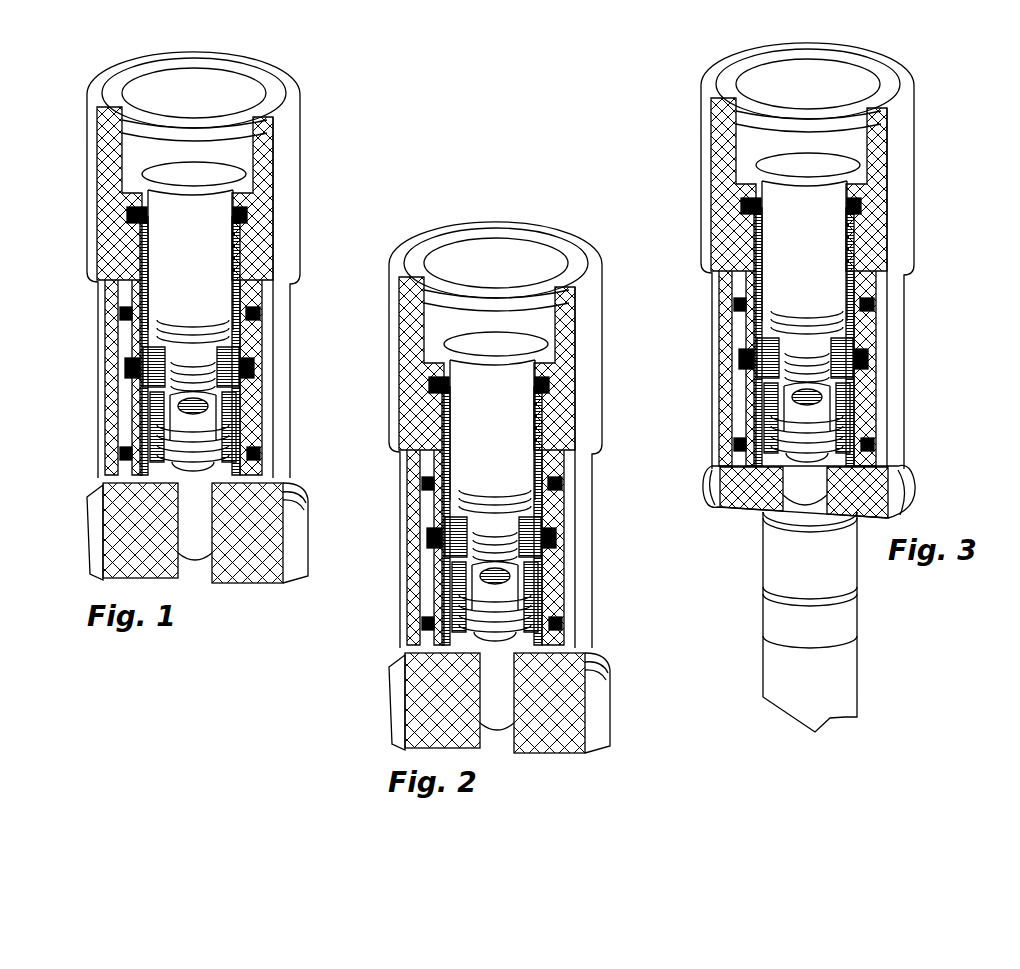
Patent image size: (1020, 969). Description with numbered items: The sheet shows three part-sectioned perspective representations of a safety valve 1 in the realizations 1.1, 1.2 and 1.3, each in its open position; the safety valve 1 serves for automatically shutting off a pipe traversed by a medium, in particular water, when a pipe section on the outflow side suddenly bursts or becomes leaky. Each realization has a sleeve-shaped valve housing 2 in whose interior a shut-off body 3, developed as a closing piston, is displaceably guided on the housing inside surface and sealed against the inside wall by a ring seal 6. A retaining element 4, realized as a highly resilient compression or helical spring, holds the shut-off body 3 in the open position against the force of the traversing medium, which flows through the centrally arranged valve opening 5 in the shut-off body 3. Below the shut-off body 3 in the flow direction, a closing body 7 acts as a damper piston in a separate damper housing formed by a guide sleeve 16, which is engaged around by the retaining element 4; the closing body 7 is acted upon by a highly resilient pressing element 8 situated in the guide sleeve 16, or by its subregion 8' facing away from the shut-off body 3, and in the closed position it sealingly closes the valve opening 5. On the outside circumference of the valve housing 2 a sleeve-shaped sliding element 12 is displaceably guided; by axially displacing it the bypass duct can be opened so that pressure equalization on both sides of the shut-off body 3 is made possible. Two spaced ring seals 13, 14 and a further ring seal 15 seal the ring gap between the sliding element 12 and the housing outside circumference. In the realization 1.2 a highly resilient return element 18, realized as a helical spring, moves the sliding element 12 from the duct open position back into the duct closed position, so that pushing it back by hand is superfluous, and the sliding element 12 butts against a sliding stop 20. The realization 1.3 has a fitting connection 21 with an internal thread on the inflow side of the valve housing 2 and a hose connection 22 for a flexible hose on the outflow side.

In FIG. 1, the safety valve 1 is at (356, 127).
In FIG. 2, the safety valve 1 is at (593, 182).
In FIG. 3, the safety valve 1 is at (972, 122).
In FIG. 1, the realization of the safety valve 1.1 is at (284, 59).
In FIG. 2, the realization of the safety valve 1.2 is at (499, 207).
In FIG. 3, the realization of the safety valve 1.3 is at (703, 58).
In FIG. 1, the valve housing 2 is at (124, 292).
In FIG. 2, the valve housing 2 is at (405, 466).
In FIG. 3, the valve housing 2 is at (858, 290).
In FIG. 1, the shut-off body 3 is at (190, 320).
In FIG. 2, the shut-off body 3 is at (465, 490).
In FIG. 3, the shut-off body 3 is at (780, 316).
In FIG. 1, the retaining element 4 is at (252, 430).
In FIG. 2, the retaining element 4 is at (545, 590).
In FIG. 3, the retaining element 4 is at (880, 411).
In FIG. 1, the valve opening 5 is at (201, 330).
In FIG. 2, the valve opening 5 is at (492, 525).
In FIG. 3, the valve opening 5 is at (807, 348).
In FIG. 1, the ring seal 6 is at (147, 372).
In FIG. 2, the ring seal 6 is at (437, 550).
In FIG. 3, the ring seal 6 is at (740, 418).
In FIG. 1, the closing body 7 is at (258, 392).
In FIG. 2, the closing body 7 is at (525, 558).
In FIG. 3, the closing body 7 is at (813, 376).
In FIG. 1, the pressing element 8 is at (184, 533).
In FIG. 2, the pressing element 8 is at (462, 697).
In FIG. 3, the pressing element 8 is at (765, 528).
In FIG. 3, the subregion of the pressing element 8' is at (721, 517).
In FIG. 1, the sliding element 12 is at (282, 308).
In FIG. 2, the sliding element 12 is at (587, 481).
In FIG. 3, the sliding element 12 is at (720, 386).
In FIG. 1, the ring seal 13 is at (262, 306).
In FIG. 2, the ring seal 13 is at (425, 522).
In FIG. 3, the ring seal 13 is at (725, 307).
In FIG. 1, the ring seal 14 is at (268, 364).
In FIG. 2, the ring seal 14 is at (427, 538).
In FIG. 3, the ring seal 14 is at (710, 360).
In FIG. 1, the ring seal 15 is at (270, 460).
In FIG. 2, the ring seal 15 is at (410, 615).
In FIG. 3, the ring seal 15 is at (717, 458).
In FIG. 1, the guide sleeve 16 is at (190, 470).
In FIG. 2, the guide sleeve 16 is at (518, 636).
In FIG. 3, the guide sleeve 16 is at (800, 500).
In FIG. 2, the return element 18 is at (610, 643).
In FIG. 3, the sliding stop 20 is at (903, 481).
In FIG. 3, the fitting connection 21 is at (877, 66).
In FIG. 3, the hose connection 22 is at (862, 572).